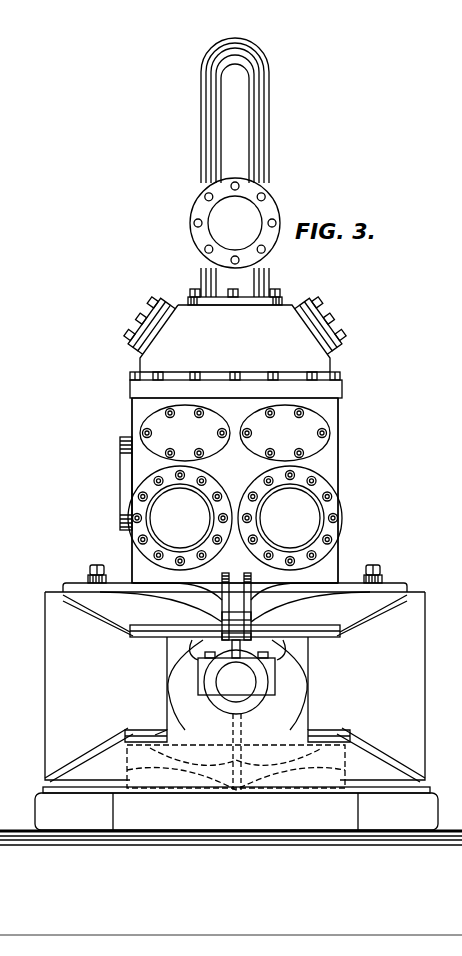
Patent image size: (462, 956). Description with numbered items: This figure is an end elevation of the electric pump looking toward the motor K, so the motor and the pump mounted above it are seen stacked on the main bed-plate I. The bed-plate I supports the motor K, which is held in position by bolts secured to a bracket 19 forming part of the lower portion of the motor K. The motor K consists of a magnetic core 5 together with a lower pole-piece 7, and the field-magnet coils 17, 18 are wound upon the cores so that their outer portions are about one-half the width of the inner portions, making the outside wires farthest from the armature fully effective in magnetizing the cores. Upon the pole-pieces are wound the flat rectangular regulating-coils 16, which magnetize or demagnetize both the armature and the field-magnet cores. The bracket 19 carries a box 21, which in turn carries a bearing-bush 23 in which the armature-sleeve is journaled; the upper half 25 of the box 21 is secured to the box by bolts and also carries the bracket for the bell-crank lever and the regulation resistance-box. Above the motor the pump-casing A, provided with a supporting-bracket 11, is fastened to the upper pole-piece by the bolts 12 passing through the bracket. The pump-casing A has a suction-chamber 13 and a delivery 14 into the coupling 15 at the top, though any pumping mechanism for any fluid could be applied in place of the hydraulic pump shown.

The coupling 15 is at (235, 223).
The delivery 14 is at (235, 346).
The pump-casing A is at (235, 490).
The suction-chamber 13 is at (120, 468).
The supporting-bracket 11 is at (136, 475).
The bolts 12 is at (95, 565).
The field-magnet coil 18 is at (89, 687).
The field-magnet coil 17 is at (381, 686).
The magnetic core 5 is at (381, 755).
The regulating-coils 16 is at (320, 630).
The motor K is at (237, 683).
The bearing-bush 23 is at (170, 648).
The box 21 is at (247, 682).
The upper half of box 25 is at (236, 662).
The bracket 19 is at (251, 752).
The lower pole-piece 7 is at (167, 726).
The bed-plate I is at (236, 808).